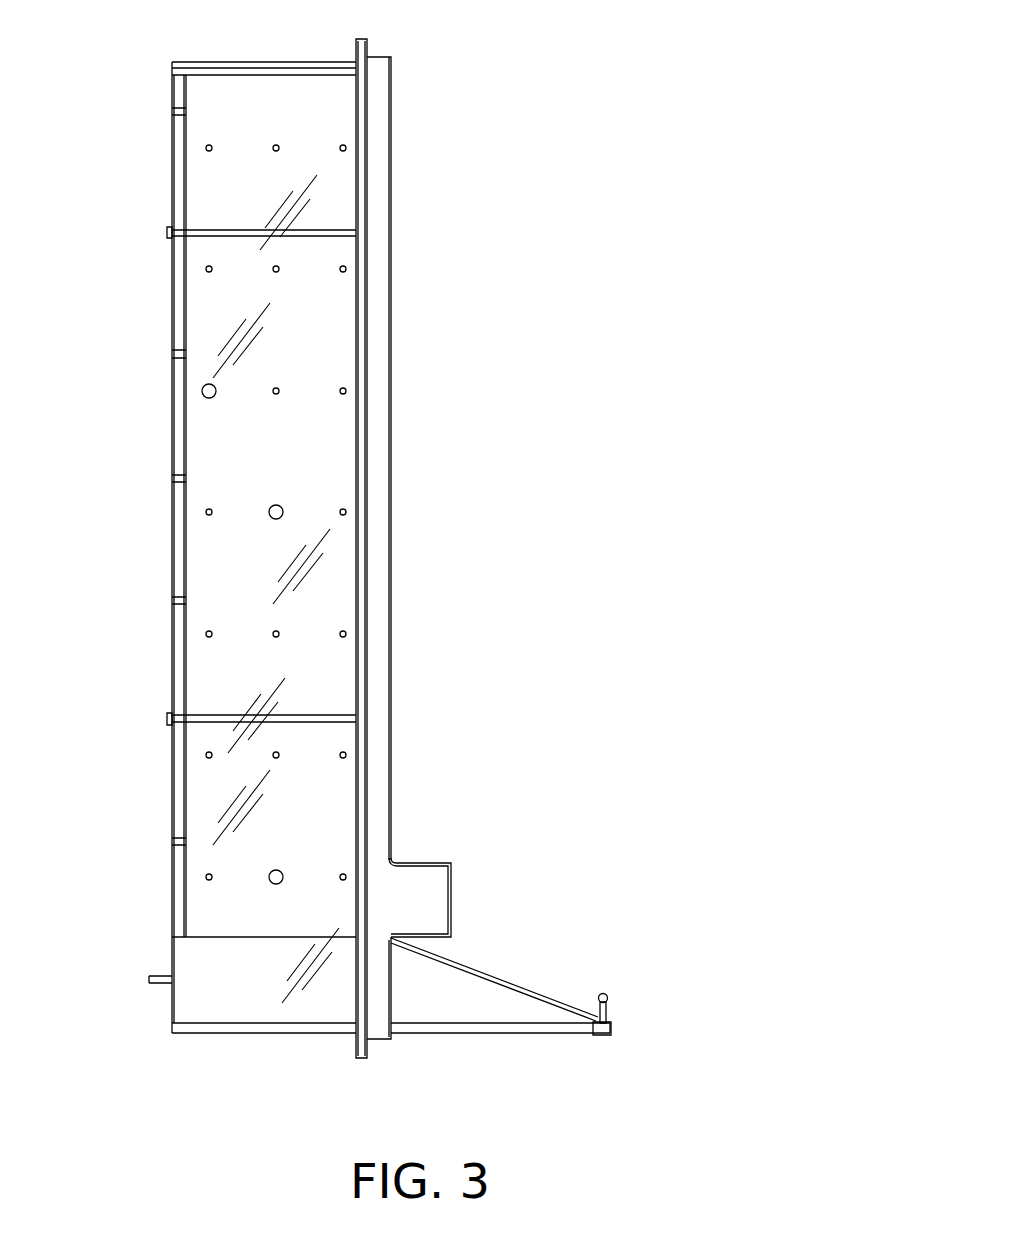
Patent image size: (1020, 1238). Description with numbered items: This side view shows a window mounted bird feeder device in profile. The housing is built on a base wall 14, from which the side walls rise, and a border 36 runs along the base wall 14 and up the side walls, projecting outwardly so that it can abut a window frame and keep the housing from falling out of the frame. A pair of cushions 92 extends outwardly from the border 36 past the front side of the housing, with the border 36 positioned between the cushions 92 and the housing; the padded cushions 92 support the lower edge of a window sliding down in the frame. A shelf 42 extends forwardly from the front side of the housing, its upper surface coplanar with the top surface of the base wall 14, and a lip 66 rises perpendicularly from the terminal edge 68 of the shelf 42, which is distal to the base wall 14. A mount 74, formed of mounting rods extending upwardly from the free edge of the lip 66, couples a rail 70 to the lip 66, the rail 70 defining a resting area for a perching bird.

The base wall 14 is at (197, 1027).
The border 36 is at (380, 438).
The shelf 42 is at (470, 1036).
The lip 66 is at (606, 1026).
The terminal edge 68 is at (594, 1036).
The rail 70 is at (607, 995).
The mount 74 is at (606, 1010).
The pair of cushions 92 is at (432, 882).